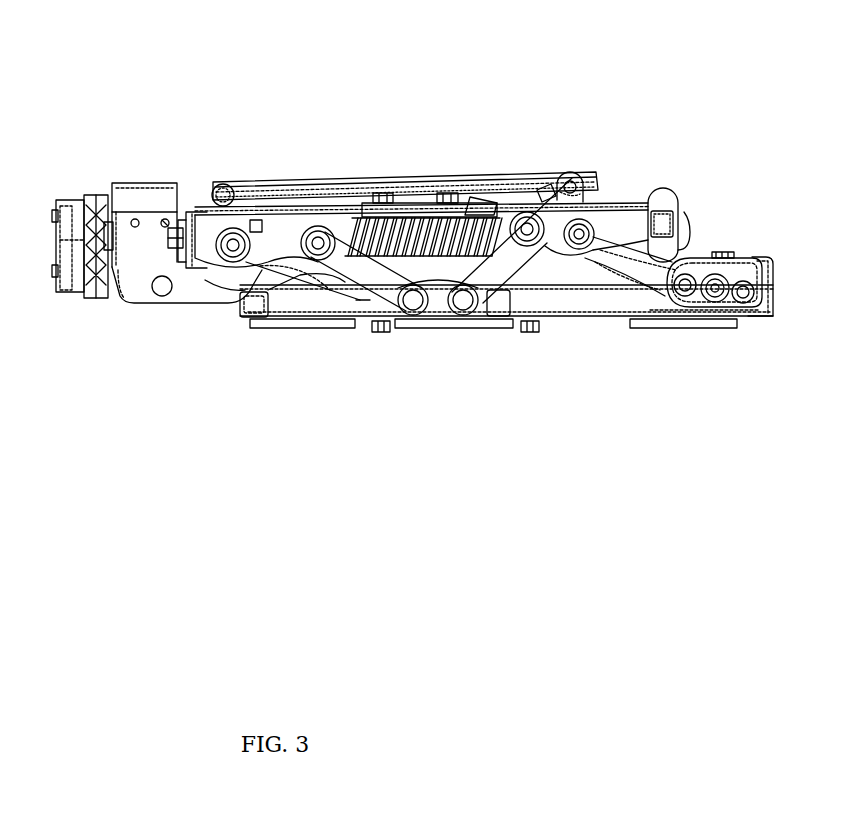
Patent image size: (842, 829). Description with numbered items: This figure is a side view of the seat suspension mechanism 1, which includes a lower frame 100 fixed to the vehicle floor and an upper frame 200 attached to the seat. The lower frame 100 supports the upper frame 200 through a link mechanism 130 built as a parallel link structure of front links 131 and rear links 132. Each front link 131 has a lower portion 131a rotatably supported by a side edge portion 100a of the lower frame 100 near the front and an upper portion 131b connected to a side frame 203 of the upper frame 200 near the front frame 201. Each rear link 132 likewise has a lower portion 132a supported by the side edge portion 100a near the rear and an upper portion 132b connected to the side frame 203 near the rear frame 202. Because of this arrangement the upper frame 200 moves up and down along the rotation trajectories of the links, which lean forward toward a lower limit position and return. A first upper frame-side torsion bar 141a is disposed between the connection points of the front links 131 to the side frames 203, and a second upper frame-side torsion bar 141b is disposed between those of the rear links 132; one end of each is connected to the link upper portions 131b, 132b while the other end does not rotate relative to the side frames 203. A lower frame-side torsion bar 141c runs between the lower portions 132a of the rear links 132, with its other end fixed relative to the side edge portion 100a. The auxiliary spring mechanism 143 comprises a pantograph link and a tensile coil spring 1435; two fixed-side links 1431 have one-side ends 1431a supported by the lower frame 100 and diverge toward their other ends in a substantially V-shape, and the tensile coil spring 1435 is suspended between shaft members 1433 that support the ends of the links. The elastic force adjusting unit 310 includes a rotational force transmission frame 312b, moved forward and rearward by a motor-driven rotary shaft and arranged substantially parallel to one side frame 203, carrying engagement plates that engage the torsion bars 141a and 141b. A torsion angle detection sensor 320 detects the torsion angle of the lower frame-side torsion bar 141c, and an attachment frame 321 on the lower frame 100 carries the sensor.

The seat suspension mechanism 1 is at (147, 150).
The lower frame 100 is at (238, 322).
The side edge portion 100a is at (527, 332).
The link mechanism 130 is at (307, 318).
The front link 131 is at (325, 312).
The lower portion of front link 131a is at (323, 292).
The upper portion of front link 131b is at (247, 318).
The rear link 132 is at (630, 302).
The lower portion of rear link 132a is at (667, 312).
The upper portion of rear link 132b is at (598, 304).
The first upper frame-side torsion bar 141a is at (222, 206).
The second upper frame-side torsion bar 141b is at (596, 206).
The lower frame-side torsion bar 141c is at (722, 315).
The auxiliary spring mechanism 143 is at (382, 296).
The fixed-side link 1431 is at (385, 306).
The one-side end of fixed-side link 1431a is at (420, 320).
The shaft member 1433 is at (312, 200).
The tensile coil spring 1435 is at (462, 196).
The upper frame 200 is at (663, 203).
The front frame 201 is at (197, 262).
The rear frame 202 is at (685, 212).
The side frame 203 is at (256, 230).
The elastic force adjusting unit 310 is at (99, 308).
The rotational force transmission frame 312b is at (400, 186).
The torsion angle detection sensor 320 is at (726, 254).
The attachment frame 321 is at (746, 260).